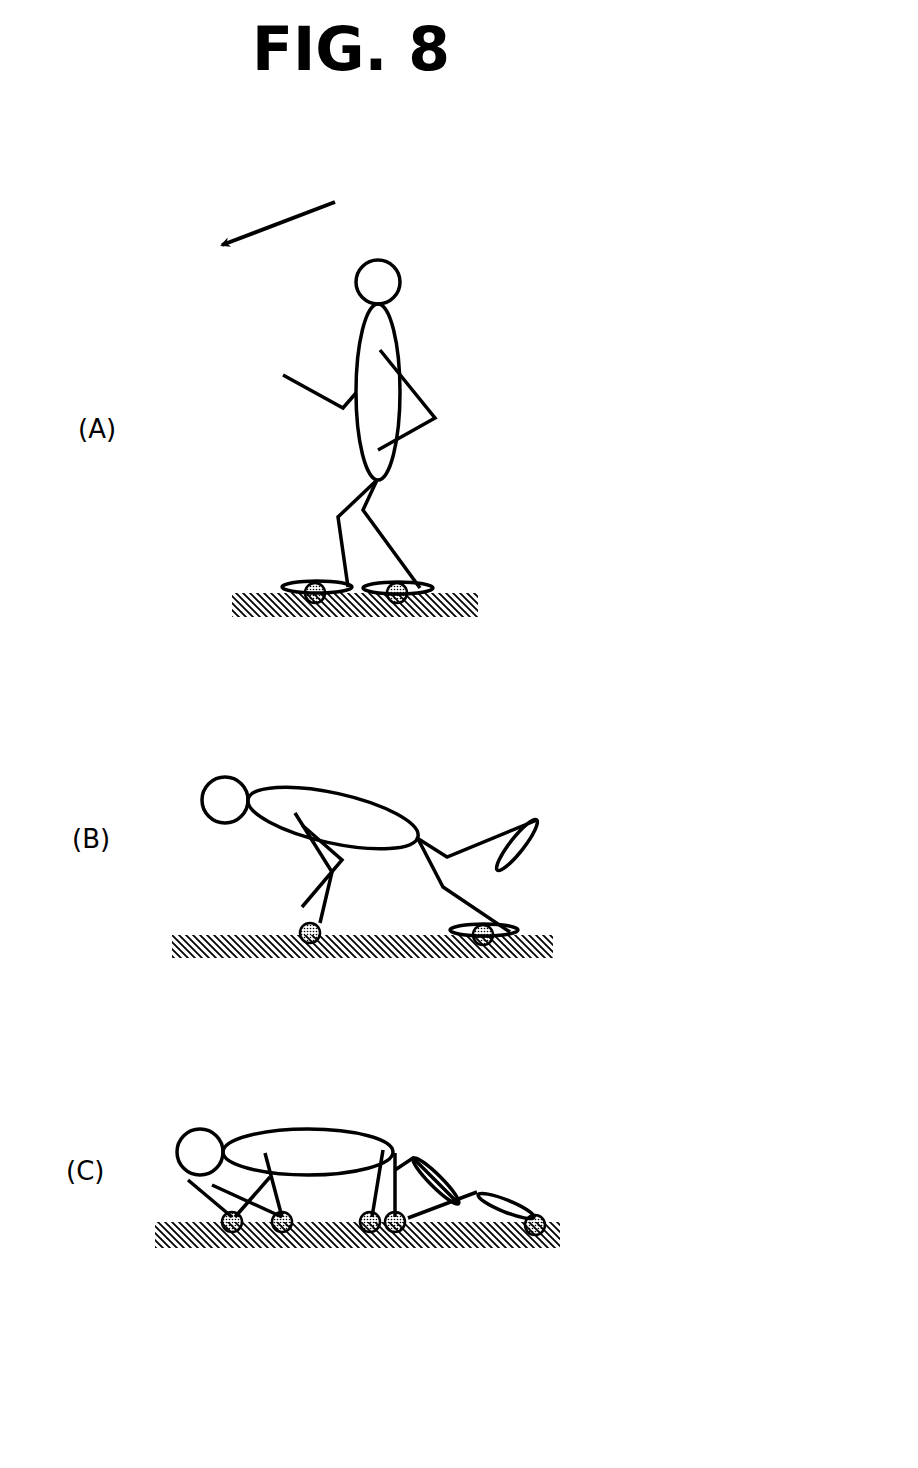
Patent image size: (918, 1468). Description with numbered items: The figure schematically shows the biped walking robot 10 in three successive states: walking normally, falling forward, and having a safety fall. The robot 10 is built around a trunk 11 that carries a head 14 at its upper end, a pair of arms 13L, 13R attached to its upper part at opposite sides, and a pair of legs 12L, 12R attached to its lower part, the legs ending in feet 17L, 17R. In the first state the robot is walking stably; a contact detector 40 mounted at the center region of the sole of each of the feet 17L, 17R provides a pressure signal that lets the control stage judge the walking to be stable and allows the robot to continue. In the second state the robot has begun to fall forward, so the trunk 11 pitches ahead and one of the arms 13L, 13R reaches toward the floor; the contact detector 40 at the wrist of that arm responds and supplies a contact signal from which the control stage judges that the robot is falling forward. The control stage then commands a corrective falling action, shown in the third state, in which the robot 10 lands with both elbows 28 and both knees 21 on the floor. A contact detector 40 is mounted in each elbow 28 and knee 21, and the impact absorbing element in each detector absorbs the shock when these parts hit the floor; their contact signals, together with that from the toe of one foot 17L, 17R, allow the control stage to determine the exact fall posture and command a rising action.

The biped walking robot 10 is at (488, 215).
The trunk 11 is at (400, 335).
The right leg 12R is at (353, 493).
The left leg 12L is at (382, 527).
The right arm 13R is at (313, 388).
The left arm 13L is at (422, 398).
The head 14 is at (402, 273).
The right foot 17R is at (298, 582).
The left foot 17L is at (433, 588).
The knee 21 is at (404, 1262).
The elbow 28 is at (221, 1254).
The contact detector 40 is at (313, 603).